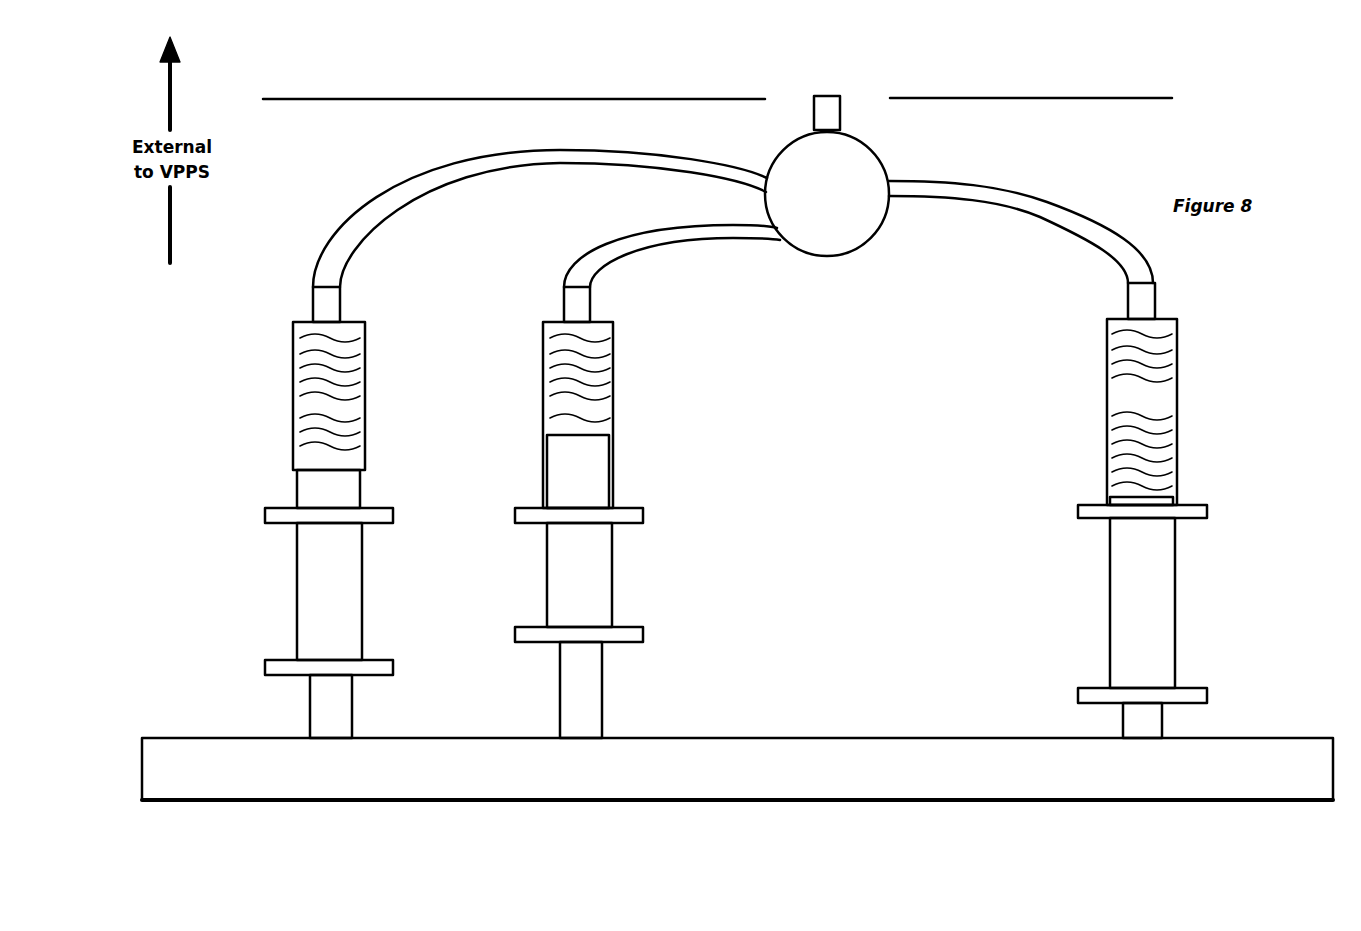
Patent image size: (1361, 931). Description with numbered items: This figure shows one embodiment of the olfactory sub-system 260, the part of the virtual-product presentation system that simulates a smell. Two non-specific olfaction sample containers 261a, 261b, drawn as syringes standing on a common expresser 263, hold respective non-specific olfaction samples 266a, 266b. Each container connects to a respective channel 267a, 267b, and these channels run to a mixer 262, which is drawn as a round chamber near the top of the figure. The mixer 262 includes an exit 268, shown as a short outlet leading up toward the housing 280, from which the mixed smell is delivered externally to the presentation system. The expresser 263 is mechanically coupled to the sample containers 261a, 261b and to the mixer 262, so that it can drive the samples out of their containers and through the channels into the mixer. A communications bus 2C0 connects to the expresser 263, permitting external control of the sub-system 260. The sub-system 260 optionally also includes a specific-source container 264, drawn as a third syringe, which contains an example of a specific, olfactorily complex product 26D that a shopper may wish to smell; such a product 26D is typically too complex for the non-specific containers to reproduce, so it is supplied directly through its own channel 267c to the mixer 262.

The olfactory sub-system 260 is at (1266, 58).
The housing 280 is at (320, 99).
The exit 268 is at (829, 80).
The mixer 262 is at (827, 194).
The channel 267a is at (405, 176).
The channel 267b is at (628, 242).
The channel 267c is at (1046, 200).
The non-specific olfaction sample container 261a is at (366, 322).
The non-specific olfaction sample container 261b is at (542, 322).
The specific-source container 264 is at (1106, 319).
The non-specific olfaction sample 266a is at (302, 408).
The non-specific olfaction sample 266b is at (552, 408).
The olfactorily complex product 26D is at (1114, 404).
The expresser 263 is at (737, 769).
The communications bus 2C0 is at (735, 738).